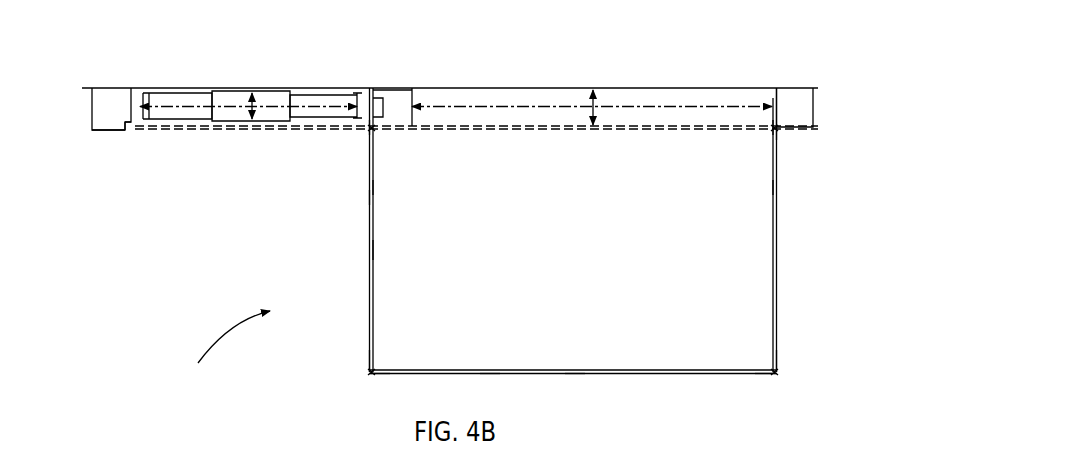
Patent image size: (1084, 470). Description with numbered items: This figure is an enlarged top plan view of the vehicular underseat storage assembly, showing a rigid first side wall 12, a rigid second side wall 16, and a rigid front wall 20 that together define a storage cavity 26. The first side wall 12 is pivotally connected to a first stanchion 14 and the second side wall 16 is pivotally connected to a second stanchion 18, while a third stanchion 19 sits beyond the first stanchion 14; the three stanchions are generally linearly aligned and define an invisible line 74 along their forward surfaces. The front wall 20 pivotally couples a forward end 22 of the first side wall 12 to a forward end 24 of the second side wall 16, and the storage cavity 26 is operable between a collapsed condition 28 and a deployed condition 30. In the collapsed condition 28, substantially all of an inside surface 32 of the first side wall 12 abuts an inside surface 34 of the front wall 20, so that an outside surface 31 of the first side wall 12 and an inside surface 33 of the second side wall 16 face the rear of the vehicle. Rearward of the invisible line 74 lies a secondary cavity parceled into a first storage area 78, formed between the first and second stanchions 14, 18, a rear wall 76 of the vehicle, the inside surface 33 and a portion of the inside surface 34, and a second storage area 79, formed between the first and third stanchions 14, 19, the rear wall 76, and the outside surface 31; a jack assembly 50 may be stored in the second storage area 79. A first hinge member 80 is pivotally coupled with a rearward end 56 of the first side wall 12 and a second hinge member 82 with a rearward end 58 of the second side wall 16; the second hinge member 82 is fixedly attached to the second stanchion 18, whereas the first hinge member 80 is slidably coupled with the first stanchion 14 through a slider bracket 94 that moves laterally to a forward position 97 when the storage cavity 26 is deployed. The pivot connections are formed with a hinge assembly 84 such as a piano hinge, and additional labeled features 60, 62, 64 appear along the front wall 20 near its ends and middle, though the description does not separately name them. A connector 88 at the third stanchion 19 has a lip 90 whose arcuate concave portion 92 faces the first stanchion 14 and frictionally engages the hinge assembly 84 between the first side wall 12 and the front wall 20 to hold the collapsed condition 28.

The first side wall 12 is at (367, 294).
The first stanchion 14 is at (410, 102).
The second side wall 16 is at (778, 280).
The second stanchion 18 is at (793, 102).
The third stanchion 19 is at (118, 106).
The front wall 20 is at (682, 373).
The forward end of the first side wall 22 is at (368, 356).
The forward end of the second side wall 24 is at (778, 353).
The storage cavity 26 is at (452, 250).
The collapsed condition 28 is at (235, 137).
The deployed condition 30 is at (225, 349).
The outside surface of the first side wall 31 is at (367, 198).
The inside surface of the first side wall 32 is at (373, 183).
The inside surface of the second side wall 33 is at (772, 185).
The inside surface of the front wall 34 is at (485, 370).
The jack assembly 50 is at (228, 101).
The rearward end of the first side wall 56 is at (368, 130).
The rearward end of the second side wall 58 is at (781, 135).
The first lower joint 60 is at (387, 377).
The second lower joint 62 is at (760, 377).
The bottom joint 64 is at (572, 375).
The invisible line 74 is at (548, 130).
The rear wall 76 is at (522, 93).
The first storage area 78 is at (602, 93).
The second storage area 79 is at (257, 97).
The first hinge member 80 is at (364, 106).
The second hinge member 82 is at (775, 128).
The hinge assembly 84 is at (373, 130).
The connector 88 is at (122, 126).
The lip 90 is at (118, 127).
The arcuate concave portion 92 is at (128, 130).
The slider bracket 94 is at (385, 103).
The forward position 97 is at (390, 103).